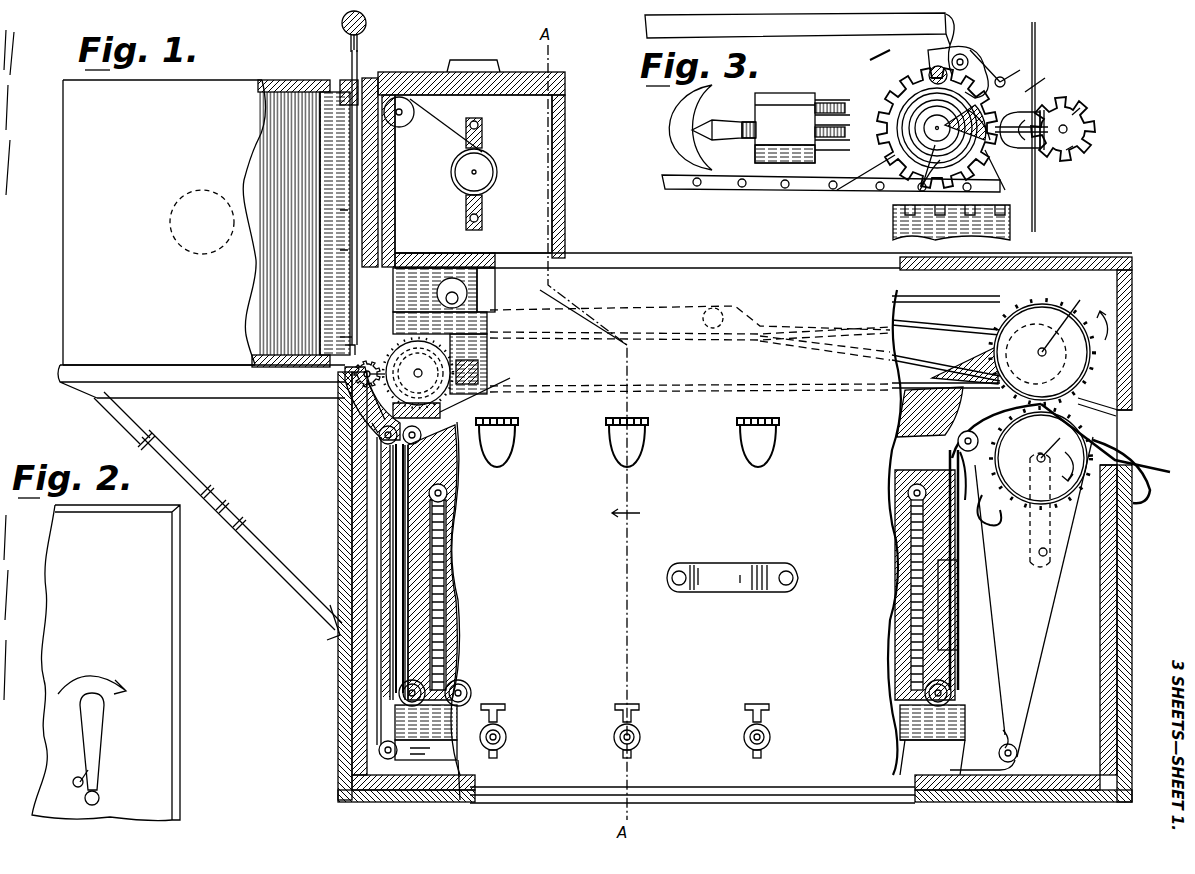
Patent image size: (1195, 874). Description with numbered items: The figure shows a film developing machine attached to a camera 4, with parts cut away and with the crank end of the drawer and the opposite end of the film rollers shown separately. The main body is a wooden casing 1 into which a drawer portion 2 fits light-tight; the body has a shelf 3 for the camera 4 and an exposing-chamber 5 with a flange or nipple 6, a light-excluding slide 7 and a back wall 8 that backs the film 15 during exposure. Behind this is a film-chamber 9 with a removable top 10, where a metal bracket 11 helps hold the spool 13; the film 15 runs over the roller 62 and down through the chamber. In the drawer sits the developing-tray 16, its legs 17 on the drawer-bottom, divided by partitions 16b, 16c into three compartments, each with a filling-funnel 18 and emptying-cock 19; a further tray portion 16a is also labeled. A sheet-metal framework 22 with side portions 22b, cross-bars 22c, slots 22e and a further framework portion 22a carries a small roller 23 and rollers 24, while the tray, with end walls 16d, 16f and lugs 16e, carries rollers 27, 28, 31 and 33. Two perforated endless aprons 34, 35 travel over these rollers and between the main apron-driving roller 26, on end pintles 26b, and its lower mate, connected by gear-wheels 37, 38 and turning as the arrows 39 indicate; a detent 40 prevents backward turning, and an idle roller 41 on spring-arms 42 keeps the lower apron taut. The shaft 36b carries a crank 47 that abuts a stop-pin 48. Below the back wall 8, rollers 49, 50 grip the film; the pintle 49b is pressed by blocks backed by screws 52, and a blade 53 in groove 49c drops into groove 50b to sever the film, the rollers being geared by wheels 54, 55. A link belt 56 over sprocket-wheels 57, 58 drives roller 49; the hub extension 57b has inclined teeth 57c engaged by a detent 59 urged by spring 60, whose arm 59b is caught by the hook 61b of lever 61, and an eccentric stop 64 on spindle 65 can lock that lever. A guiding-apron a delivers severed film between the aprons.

In FIG. 1, the casing 1 is at (346, 436).
In FIG. 1, the drawer portion 2 is at (800, 272).
In FIG. 2, the drawer portion 2 is at (106, 663).
In FIG. 1, the shelf 3 is at (60, 374).
In FIG. 1, the camera 4 is at (63, 310).
In FIG. 1, the exposing-chamber 5 is at (340, 230).
In FIG. 1, the flange or nipple 6 is at (312, 98).
In FIG. 1, the light-excluding slide 7 is at (366, 36).
In FIG. 1, the back wall 8 is at (318, 135).
In FIG. 1, the film-chamber 9 is at (530, 122).
In FIG. 1, the door or removable top 10 is at (563, 74).
In FIG. 1, the metal bracket 11 is at (485, 142).
In FIG. 1, the spool 13 is at (500, 176).
In FIG. 1, the film 15 is at (353, 170).
In FIG. 3, the film 15 is at (1037, 48).
In FIG. 1, the developing-tray 16 is at (393, 476).
In FIG. 1, the belt portion 16a is at (464, 393).
In FIG. 3, the partition 16b is at (893, 218).
In FIG. 1, the partition 16c is at (452, 365).
In FIG. 3, the partition 16c is at (825, 100).
In FIG. 1, the end wall 16d is at (975, 680).
In FIG. 1, the lugs 16e is at (1005, 525).
In FIG. 1, the end wall 16f is at (388, 618).
In FIG. 1, the legs 17 is at (905, 752).
In FIG. 1, the filling-funnel 18 is at (508, 460).
In FIG. 1, the emptying-cock 19 is at (506, 737).
In FIG. 1, the sheet-metal framework 22 is at (408, 497).
In FIG. 1, the wire portion 22a is at (418, 536).
In FIG. 1, the side portions 22b is at (400, 518).
In FIG. 1, the cross-bars 22c is at (447, 540).
In FIG. 1, the slots 22e is at (905, 640).
In FIG. 1, the small roller 23 is at (372, 427).
In FIG. 1, the rollers 24 is at (399, 693).
In FIG. 1, the main apron-driving roller 26 is at (1085, 360).
In FIG. 1, the end pintles 26b is at (1073, 316).
In FIG. 1, the small roller 27 is at (958, 447).
In FIG. 1, the small roller 28 is at (420, 440).
In FIG. 1, the rollers 31 is at (448, 492).
In FIG. 1, the roller 33 is at (378, 752).
In FIG. 1, the endless apron 34 is at (420, 556).
In FIG. 1, the endless apron 35 is at (440, 790).
In FIG. 1, the shaft or pintle 36b is at (1041, 458).
In FIG. 1, the toothed gear-wheel 37 is at (1098, 403).
In FIG. 1, the toothed gear-wheel 38 is at (1052, 512).
In FIG. 1, the arrows 39 is at (1112, 332).
In FIG. 2, the arrows 39 is at (112, 664).
In FIG. 1, the detent 40 is at (998, 519).
In FIG. 1, the idle roller 41 is at (1018, 755).
In FIG. 1, the spring-arms 42 is at (1003, 714).
In FIG. 1, the crank 47 is at (1047, 556).
In FIG. 2, the crank 47 is at (100, 755).
In FIG. 2, the stop-pin 48 is at (76, 778).
In FIG. 1, the roller 49 is at (368, 382).
In FIG. 3, the roller 49 is at (885, 76).
In FIG. 3, the pintle 49b is at (926, 192).
In FIG. 3, the undercut groove 49c is at (1030, 92).
In FIG. 1, the roller 50 is at (337, 332).
In FIG. 3, the roller 50 is at (1062, 105).
In FIG. 3, the receiving-groove 50b is at (1072, 148).
In FIG. 3, the screws 52 is at (672, 150).
In FIG. 3, the cutting or severing blade 53 is at (1020, 160).
In FIG. 3, the toothed wheel 54 is at (866, 50).
In FIG. 3, the toothed wheel 55 is at (1075, 118).
In FIG. 1, the link belt 56 is at (946, 315).
In FIG. 3, the link belt 56 is at (782, 192).
In FIG. 3, the sprocket-wheel 57 is at (882, 178).
In FIG. 3, the hub extension 57b is at (1010, 185).
In FIG. 3, the inclined teeth 57c is at (990, 112).
In FIG. 1, the sprocket-wheel 58 is at (946, 345).
In FIG. 3, the detent 59 is at (1000, 60).
In FIG. 3, the arm 59b is at (942, 95).
In FIG. 3, the spring 60 is at (982, 52).
In FIG. 3, the lever 61 is at (848, 28).
In FIG. 1, the hook 61b is at (380, 322).
In FIG. 3, the hook 61b is at (950, 37).
In FIG. 1, the roller 62 is at (403, 98).
In FIG. 1, the eccentric stop 64 is at (470, 287).
In FIG. 1, the spindle 65 is at (487, 312).
In FIG. 1, the guiding-apron a is at (390, 420).